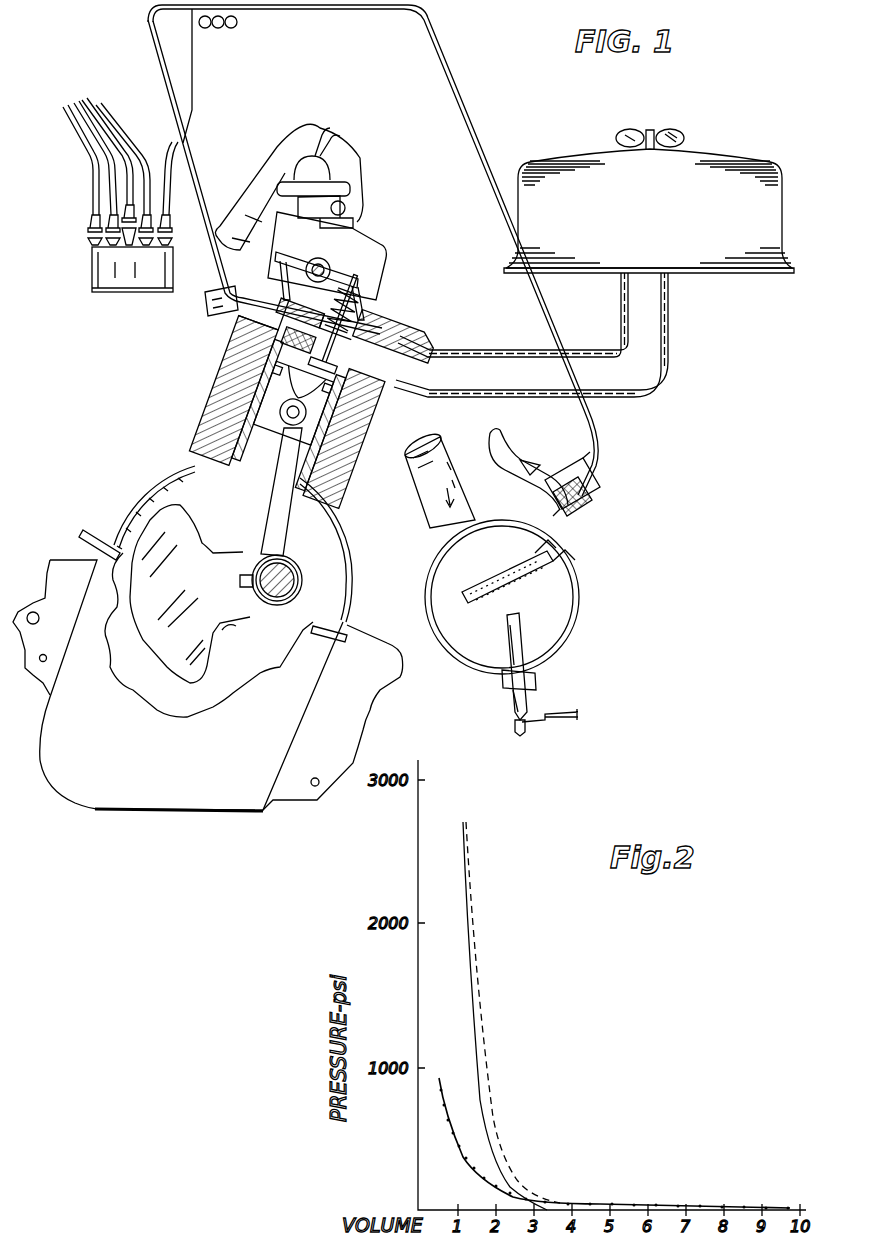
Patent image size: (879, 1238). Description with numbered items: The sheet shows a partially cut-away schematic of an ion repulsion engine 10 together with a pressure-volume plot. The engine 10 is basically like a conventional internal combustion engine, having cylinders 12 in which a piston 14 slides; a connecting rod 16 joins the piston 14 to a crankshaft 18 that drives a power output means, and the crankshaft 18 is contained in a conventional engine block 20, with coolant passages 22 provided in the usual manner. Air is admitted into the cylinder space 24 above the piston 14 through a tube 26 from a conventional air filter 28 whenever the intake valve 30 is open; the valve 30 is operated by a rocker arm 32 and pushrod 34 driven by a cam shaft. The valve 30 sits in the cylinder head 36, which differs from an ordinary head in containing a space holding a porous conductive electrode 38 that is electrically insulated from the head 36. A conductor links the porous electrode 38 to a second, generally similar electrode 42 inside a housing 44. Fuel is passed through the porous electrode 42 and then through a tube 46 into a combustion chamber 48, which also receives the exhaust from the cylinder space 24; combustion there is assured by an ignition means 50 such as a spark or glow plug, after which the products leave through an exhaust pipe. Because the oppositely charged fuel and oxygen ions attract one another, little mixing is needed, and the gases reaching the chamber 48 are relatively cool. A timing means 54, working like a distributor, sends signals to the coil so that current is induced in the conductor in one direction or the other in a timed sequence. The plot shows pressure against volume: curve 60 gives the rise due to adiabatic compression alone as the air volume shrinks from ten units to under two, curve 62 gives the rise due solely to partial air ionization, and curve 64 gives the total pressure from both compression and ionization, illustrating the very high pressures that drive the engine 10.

In FIG. 1, the ion repulsion engine 10 is at (148, 462).
In FIG. 1, the cylinder 12 is at (245, 462).
In FIG. 1, the piston 14 is at (307, 427).
In FIG. 1, the connecting rod 16 is at (275, 515).
In FIG. 1, the crankshaft 18 is at (232, 634).
In FIG. 1, the engine block 20 is at (98, 550).
In FIG. 1, the passages 22 is at (200, 450).
In FIG. 1, the cylinder space 24 is at (290, 362).
In FIG. 1, the tube 26 is at (455, 348).
In FIG. 1, the air filter 28 is at (577, 152).
In FIG. 1, the intake valve 30 is at (372, 390).
In FIG. 1, the rocker arm 32 is at (352, 255).
In FIG. 1, the pushrod 34 is at (270, 260).
In FIG. 1, the cylinder head 36 is at (385, 314).
In FIG. 1, the porous conductive electrode 38 is at (262, 333).
In FIG. 1, the electrode 42 is at (590, 507).
In FIG. 1, the housing 44 is at (572, 536).
In FIG. 1, the tube 46 is at (510, 590).
In FIG. 1, the combustion chamber 48 is at (578, 630).
In FIG. 1, the ignition means 50 is at (525, 683).
In FIG. 1, the timing means 54 is at (90, 265).
In FIG. 2, the curve 60 is at (445, 1095).
In FIG. 2, the curve 62 is at (460, 874).
In FIG. 2, the curve 64 is at (498, 1005).